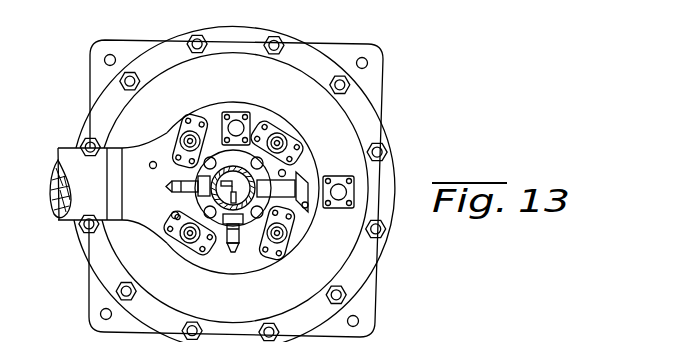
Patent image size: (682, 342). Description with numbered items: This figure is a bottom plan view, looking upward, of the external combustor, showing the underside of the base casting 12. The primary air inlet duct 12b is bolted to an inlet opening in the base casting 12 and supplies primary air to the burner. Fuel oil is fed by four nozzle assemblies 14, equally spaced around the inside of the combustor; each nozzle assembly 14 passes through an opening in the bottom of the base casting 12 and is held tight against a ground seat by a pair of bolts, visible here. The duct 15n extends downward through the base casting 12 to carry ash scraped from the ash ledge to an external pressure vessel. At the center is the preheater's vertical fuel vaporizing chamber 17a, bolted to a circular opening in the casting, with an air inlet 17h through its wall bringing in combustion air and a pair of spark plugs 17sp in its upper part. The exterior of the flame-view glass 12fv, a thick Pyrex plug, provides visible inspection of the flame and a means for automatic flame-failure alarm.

The base casting 12 is at (330, 112).
The primary air inlet duct 12b is at (50, 218).
The flame-view glass 12fv is at (246, 113).
The nozzle assembly 14 is at (262, 150).
The duct 15n is at (337, 198).
The air inlet 17h is at (298, 177).
The spark plugs 17sp is at (175, 181).
The fuel vaporizing chamber 17a is at (196, 190).